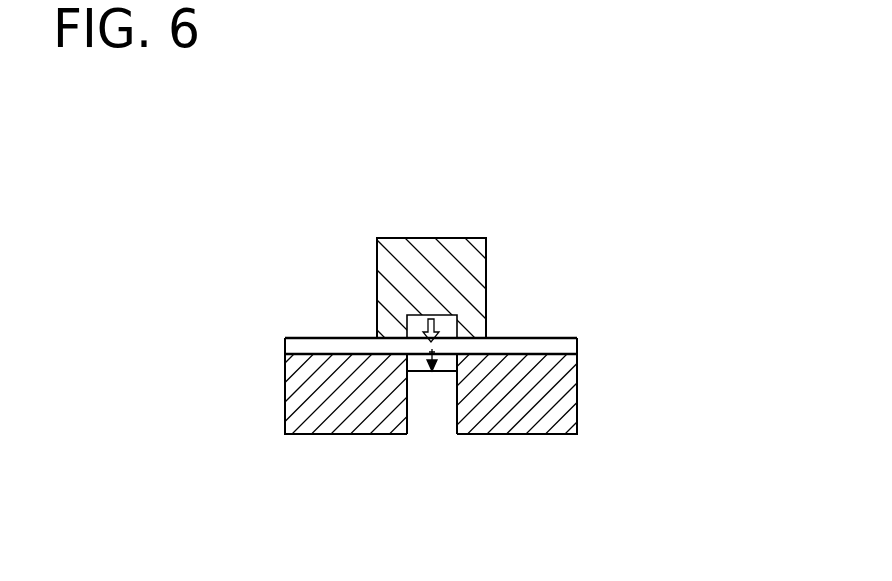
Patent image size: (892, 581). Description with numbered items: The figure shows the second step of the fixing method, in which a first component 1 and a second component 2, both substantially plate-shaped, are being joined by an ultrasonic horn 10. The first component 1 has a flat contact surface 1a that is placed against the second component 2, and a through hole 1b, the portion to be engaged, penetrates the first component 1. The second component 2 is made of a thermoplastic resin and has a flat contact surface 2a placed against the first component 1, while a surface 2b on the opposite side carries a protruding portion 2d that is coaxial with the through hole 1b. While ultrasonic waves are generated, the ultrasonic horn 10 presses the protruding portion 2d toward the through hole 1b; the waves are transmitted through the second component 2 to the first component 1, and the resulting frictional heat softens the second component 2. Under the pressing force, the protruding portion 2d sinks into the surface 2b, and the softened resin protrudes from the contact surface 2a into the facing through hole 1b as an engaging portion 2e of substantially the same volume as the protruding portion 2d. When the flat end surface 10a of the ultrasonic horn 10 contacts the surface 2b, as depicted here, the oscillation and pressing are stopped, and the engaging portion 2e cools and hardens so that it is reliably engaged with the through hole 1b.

The first component 1 is at (527, 400).
The contact surface 1a is at (323, 353).
The through hole 1b is at (400, 400).
The second component 2 is at (558, 346).
The contact surface 2a is at (543, 356).
The surface 2b is at (540, 338).
The protruding portion 2d is at (446, 313).
The engaging portion 2e is at (445, 363).
The ultrasonic horn 10 is at (470, 262).
The end surface 10a is at (473, 338).